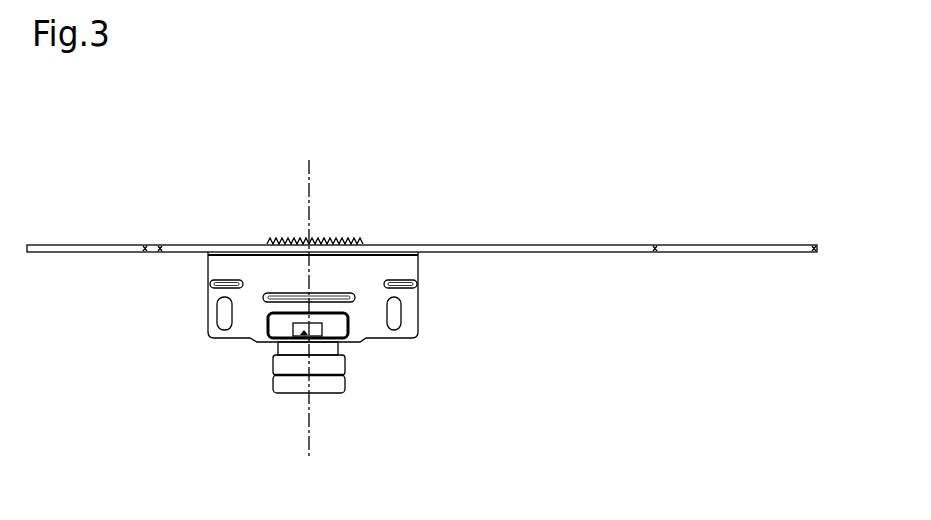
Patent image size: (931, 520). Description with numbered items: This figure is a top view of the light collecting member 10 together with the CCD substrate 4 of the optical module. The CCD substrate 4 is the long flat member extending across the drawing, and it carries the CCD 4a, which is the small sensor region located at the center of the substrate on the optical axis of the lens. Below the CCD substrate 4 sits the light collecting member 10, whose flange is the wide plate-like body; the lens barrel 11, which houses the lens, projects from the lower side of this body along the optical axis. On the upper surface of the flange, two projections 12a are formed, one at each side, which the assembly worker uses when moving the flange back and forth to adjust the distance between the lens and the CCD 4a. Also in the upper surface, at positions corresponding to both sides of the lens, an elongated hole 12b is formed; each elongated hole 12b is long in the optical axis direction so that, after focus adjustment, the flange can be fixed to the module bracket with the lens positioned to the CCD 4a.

The CCD substrate 4 is at (594, 243).
The CCD 4a is at (339, 243).
The light collecting member 10 is at (201, 410).
The lens barrel 11 is at (335, 383).
The projection 12a is at (208, 284).
The elongated hole 12b is at (220, 325).